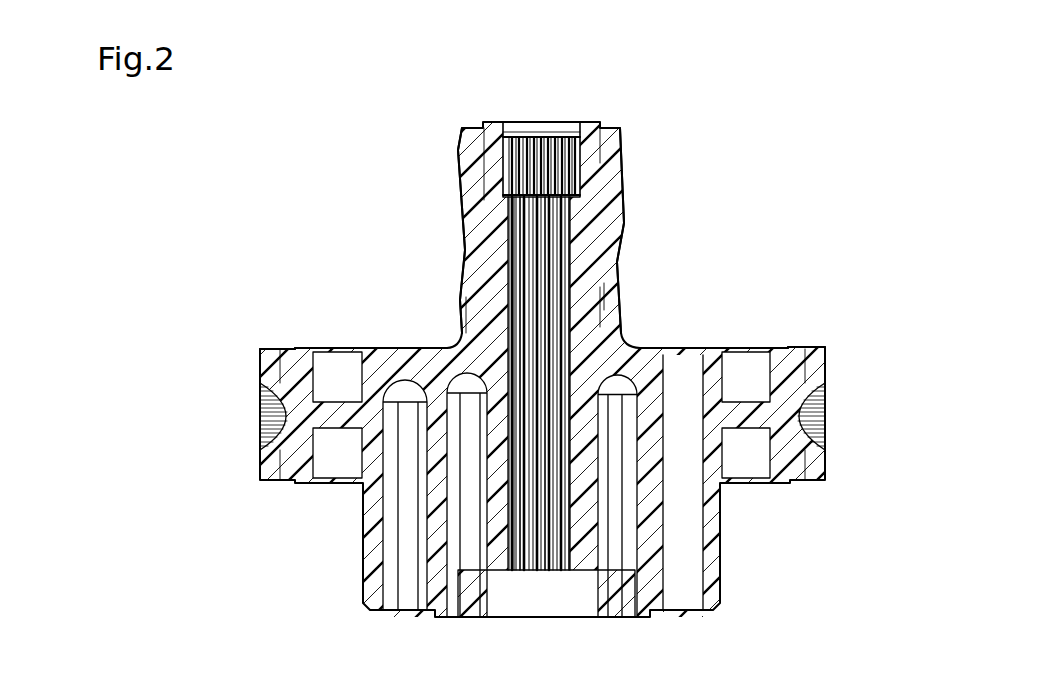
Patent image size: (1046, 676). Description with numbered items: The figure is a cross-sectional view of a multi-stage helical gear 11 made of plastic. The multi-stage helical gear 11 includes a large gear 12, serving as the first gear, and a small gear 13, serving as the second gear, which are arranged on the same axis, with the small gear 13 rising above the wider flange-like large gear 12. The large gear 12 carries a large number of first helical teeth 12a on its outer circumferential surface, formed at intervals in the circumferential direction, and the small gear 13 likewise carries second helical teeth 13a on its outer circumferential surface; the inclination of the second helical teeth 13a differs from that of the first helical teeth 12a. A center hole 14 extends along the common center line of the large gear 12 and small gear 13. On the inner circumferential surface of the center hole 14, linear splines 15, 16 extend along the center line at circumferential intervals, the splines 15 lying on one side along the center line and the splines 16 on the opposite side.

The multi-stage helical gear 11 is at (768, 112).
The large gear 12 is at (795, 347).
The first helical teeth 12a is at (826, 367).
The small gear 13 is at (620, 188).
The second helical teeth 13a is at (623, 232).
The center hole 14 is at (562, 570).
The splines 15 is at (540, 570).
The splines 16 is at (567, 135).